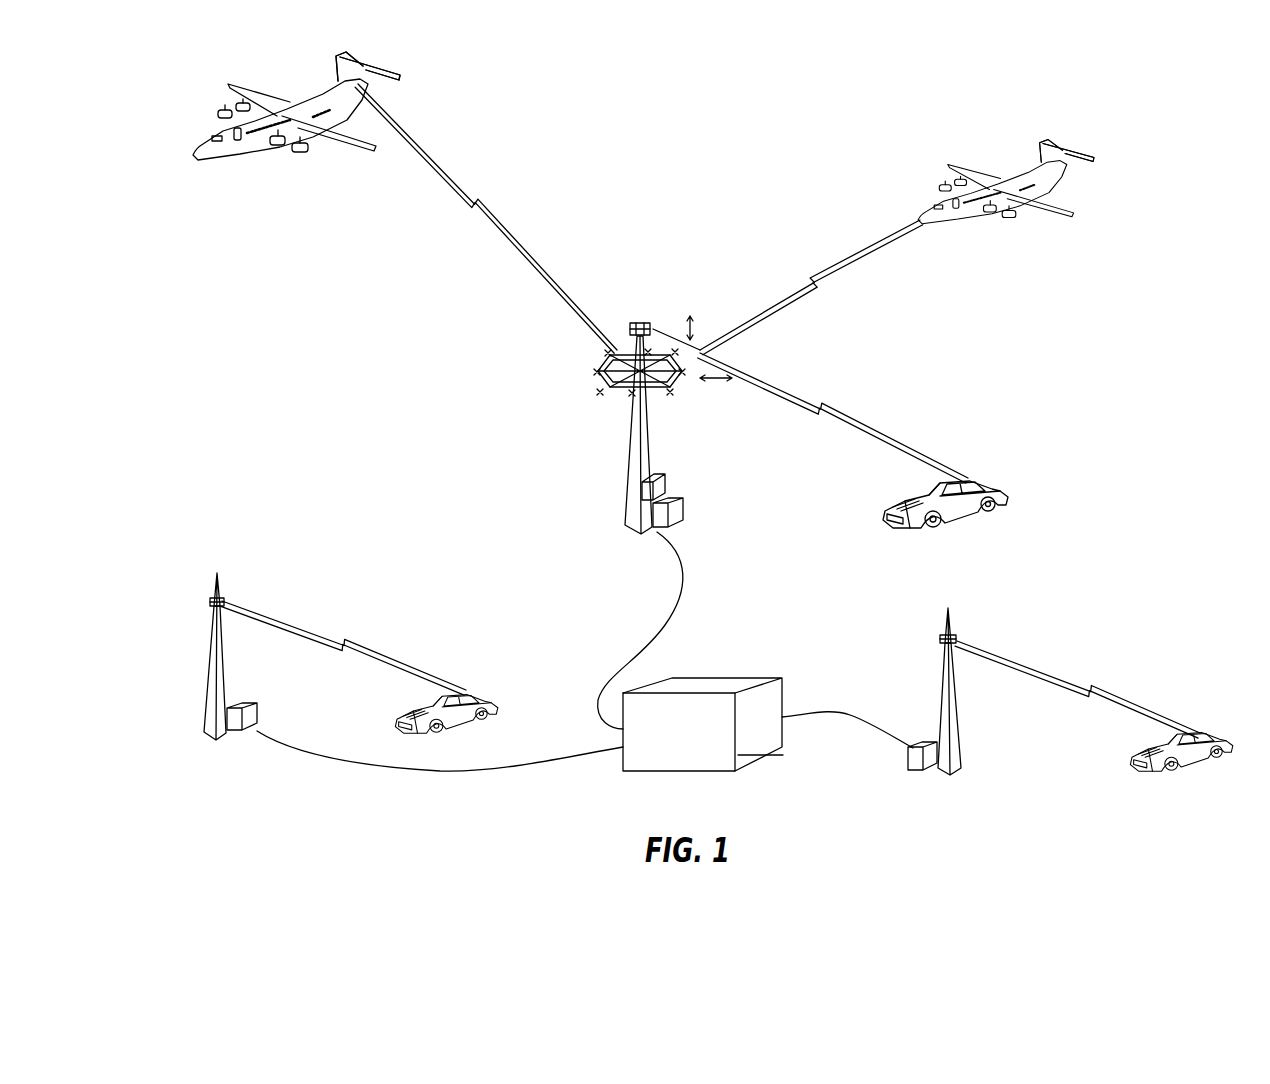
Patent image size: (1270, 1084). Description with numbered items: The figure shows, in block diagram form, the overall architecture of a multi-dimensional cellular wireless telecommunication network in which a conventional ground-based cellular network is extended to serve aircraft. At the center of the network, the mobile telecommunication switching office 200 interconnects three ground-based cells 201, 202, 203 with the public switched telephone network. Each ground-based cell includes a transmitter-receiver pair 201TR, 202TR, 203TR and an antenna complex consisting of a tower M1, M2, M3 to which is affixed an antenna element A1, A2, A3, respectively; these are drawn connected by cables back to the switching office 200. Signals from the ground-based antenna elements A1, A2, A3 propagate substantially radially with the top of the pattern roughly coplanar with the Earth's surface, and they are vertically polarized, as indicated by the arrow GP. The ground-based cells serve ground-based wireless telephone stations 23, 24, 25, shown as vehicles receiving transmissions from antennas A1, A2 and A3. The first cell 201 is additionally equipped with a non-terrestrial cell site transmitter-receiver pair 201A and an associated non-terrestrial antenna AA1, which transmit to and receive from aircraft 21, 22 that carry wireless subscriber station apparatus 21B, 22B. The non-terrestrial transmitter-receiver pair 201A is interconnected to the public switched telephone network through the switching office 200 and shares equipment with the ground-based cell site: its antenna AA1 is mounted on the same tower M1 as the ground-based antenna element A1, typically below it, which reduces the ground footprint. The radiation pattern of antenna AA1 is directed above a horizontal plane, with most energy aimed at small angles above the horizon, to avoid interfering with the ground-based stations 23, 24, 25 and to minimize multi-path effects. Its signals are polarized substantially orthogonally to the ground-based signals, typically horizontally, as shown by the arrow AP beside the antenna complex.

The aircraft 21 is at (229, 146).
The wireless subscriber station apparatus 21B is at (368, 82).
The aircraft 22 is at (942, 215).
The wireless subscriber station apparatus 22B is at (1068, 160).
The antenna element A1 is at (640, 322).
The non-terrestrial cell site antenna AA1 is at (610, 383).
The ground polarization arrow GP is at (689, 333).
The aircraft polarization arrow AP is at (717, 389).
The tower M1 is at (648, 425).
The ground-based cell 201 is at (647, 395).
The non-terrestrial cell site transmitter-receiver pair 201A is at (662, 484).
The transmitter-receiver pair 201TR is at (683, 507).
The ground-based wireless telephone station 23 is at (970, 478).
The antenna element A2 is at (210, 602).
The tower M2 is at (225, 657).
The ground-based cell 202 is at (236, 656).
The transmitter-receiver pair 202TR is at (250, 715).
The ground-based wireless telephone station 24 is at (470, 687).
The mobile telecommunication switching office 200 is at (748, 683).
The antenna element A3 is at (957, 637).
The tower M3 is at (957, 688).
The ground-based cell 203 is at (976, 711).
The transmitter-receiver pair 203TR is at (917, 767).
The ground-based wireless telephone station 25 is at (1200, 733).